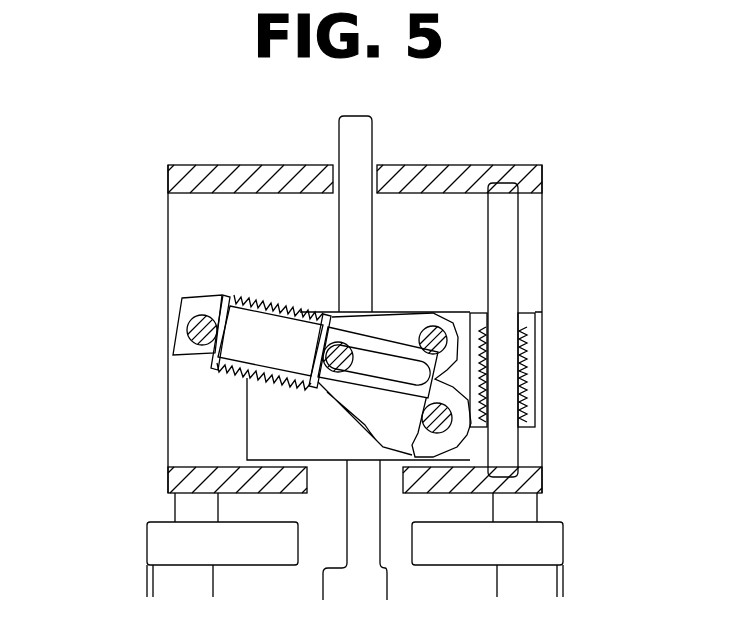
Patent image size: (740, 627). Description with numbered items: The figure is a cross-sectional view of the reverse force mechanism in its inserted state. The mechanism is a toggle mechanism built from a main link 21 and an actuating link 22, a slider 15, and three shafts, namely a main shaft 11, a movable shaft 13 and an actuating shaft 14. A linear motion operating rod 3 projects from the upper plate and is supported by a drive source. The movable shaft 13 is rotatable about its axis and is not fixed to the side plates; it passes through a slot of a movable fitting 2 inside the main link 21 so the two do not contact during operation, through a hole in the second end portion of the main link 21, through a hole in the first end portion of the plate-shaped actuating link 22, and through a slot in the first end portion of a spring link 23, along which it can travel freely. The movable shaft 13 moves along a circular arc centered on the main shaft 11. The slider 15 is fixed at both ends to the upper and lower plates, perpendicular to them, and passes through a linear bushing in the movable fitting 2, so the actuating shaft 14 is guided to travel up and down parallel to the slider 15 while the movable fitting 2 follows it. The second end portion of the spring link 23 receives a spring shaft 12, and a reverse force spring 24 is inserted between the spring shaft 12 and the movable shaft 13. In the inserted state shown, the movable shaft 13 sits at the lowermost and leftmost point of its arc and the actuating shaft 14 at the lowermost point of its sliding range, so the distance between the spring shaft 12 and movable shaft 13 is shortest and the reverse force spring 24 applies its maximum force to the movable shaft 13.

The movable fitting 2 is at (245, 399).
The linear motion operating rod 3 is at (373, 148).
The main shaft 11 is at (468, 423).
The spring shaft 12 is at (182, 323).
The movable shaft 13 is at (212, 362).
The actuating shaft 14 is at (448, 343).
The slider 15 is at (520, 245).
The main link 21 is at (462, 392).
The actuating link 22 is at (463, 363).
The spring link 23 is at (189, 321).
The reverse force spring 24 is at (250, 298).